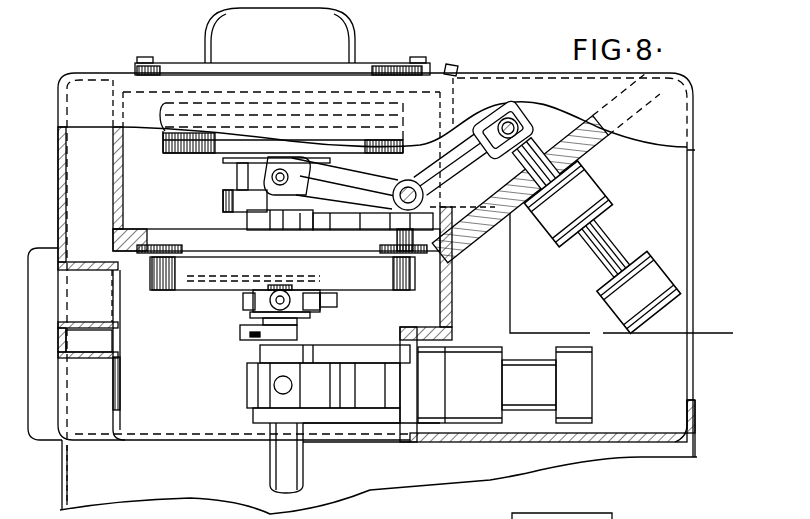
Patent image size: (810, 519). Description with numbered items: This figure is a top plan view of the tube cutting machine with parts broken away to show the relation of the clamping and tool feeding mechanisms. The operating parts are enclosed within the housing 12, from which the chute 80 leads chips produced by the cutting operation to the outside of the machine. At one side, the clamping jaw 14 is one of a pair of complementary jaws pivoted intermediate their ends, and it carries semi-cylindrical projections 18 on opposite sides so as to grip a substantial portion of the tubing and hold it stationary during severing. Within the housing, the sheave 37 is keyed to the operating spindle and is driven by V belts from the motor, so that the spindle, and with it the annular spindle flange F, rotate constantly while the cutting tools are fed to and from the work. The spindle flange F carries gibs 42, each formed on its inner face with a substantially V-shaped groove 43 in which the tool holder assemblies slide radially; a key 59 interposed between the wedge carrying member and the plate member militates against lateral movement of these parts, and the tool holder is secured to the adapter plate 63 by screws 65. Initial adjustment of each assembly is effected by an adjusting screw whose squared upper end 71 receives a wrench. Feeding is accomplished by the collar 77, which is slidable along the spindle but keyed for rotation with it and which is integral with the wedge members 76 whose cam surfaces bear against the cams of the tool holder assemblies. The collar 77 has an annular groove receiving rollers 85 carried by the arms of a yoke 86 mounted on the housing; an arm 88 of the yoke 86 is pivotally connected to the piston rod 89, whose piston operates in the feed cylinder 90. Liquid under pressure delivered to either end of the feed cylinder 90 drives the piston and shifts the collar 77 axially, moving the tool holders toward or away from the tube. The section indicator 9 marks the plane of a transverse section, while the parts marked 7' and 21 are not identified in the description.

The housing 12 is at (180, 203).
The sheave 37 is at (176, 153).
The screws 65 is at (458, 74).
The collar 77 is at (224, 162).
The rollers 85 is at (240, 184).
The wedge member 76 is at (248, 214).
The yoke 86 is at (363, 172).
The arm 88 is at (462, 175).
The piston rod 89 is at (518, 147).
The feed cylinder 90 is at (610, 224).
The spindle flange F is at (170, 290).
The squared upper end 71 is at (292, 289).
The key 59 is at (260, 296).
The V-shaped groove 43 is at (308, 292).
The gib 42 is at (322, 298).
The adapter plate 63 is at (257, 337).
The section line 9- 9 is at (203, 325).
The clamping jaw 14 is at (250, 402).
The semi-cylindrical projections 18 is at (263, 423).
The rod 7' is at (350, 464).
The pipe 21 is at (514, 407).
The chute 80 is at (53, 437).